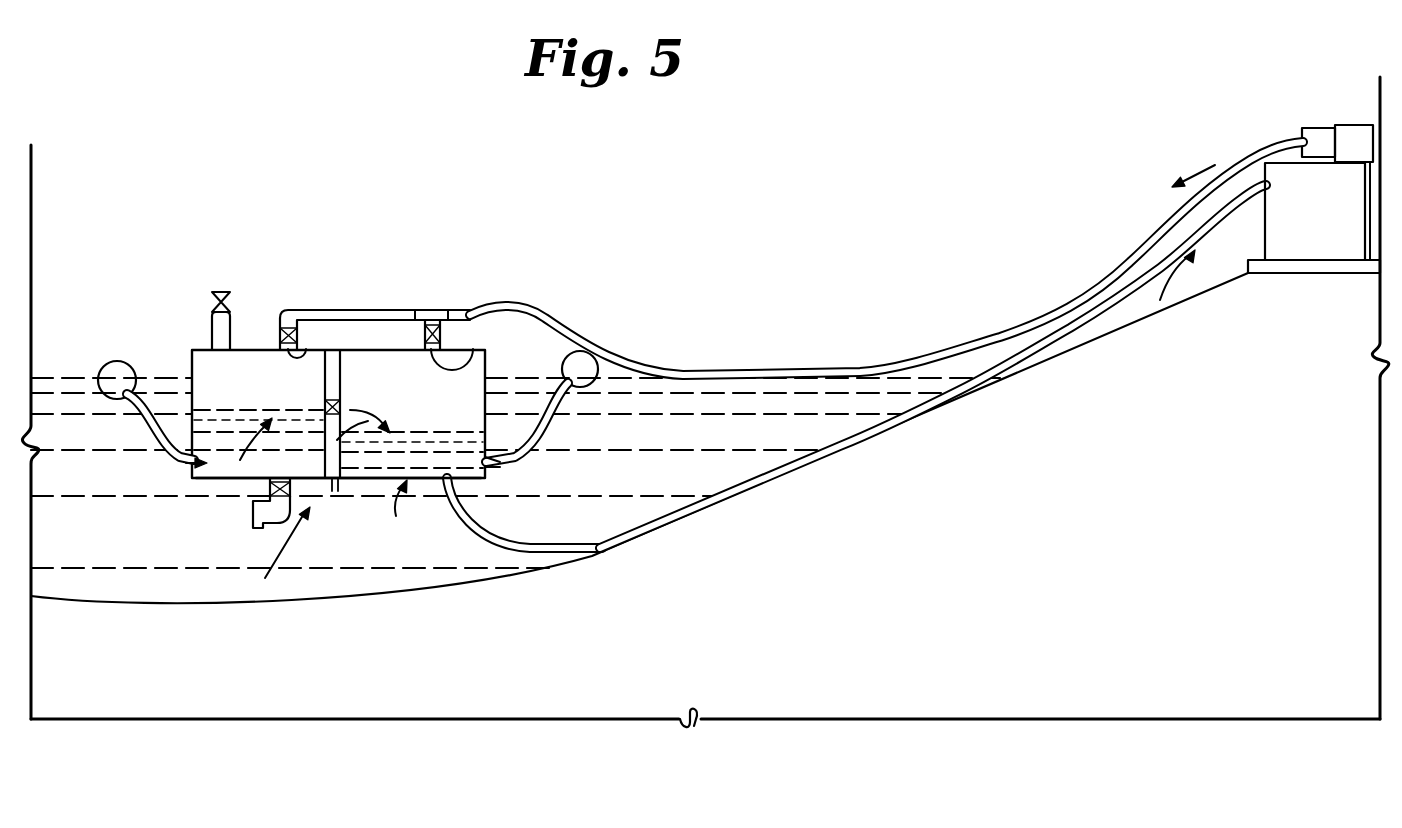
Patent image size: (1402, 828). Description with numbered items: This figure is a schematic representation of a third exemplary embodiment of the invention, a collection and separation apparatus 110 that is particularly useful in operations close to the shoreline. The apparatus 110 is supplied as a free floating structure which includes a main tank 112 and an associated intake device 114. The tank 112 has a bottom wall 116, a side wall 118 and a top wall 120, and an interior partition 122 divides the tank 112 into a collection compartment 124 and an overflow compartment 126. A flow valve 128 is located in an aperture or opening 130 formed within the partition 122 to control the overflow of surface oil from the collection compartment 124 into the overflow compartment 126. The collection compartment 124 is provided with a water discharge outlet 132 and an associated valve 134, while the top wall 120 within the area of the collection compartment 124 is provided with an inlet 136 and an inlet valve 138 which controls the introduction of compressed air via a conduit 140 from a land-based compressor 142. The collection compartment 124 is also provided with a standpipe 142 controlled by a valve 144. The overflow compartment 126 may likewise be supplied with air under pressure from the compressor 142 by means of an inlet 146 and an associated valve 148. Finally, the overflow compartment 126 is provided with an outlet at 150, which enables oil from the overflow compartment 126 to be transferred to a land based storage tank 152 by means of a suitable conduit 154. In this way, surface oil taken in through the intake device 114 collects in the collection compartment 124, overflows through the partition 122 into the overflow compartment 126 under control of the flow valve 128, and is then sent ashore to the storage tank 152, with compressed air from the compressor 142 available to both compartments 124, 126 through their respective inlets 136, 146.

The collection and separation apparatus 110 is at (639, 439).
The main tank 112 is at (338, 506).
The intake device 114 is at (115, 360).
The bottom wall 116 is at (308, 488).
The side wall 118 is at (485, 416).
The top wall 120 is at (252, 348).
The interior partition 122 is at (377, 416).
The collection compartment 124 is at (256, 470).
The overflow compartment 126 is at (487, 466).
The flow valve 128 is at (258, 408).
The aperture or opening 130 is at (337, 400).
The water discharge outlet 132 is at (262, 535).
The valve 134 is at (300, 512).
The inlet 136 is at (312, 354).
The inlet valve 138 is at (300, 331).
The conduit 140 is at (412, 310).
The land-based compressor 142 is at (212, 330).
The valve 144 is at (222, 292).
The inlet 146 is at (442, 332).
The valve 148 is at (468, 313).
The outlet 150 is at (463, 481).
The land based storage tank 152 is at (1312, 255).
The conduit 154 is at (890, 424).